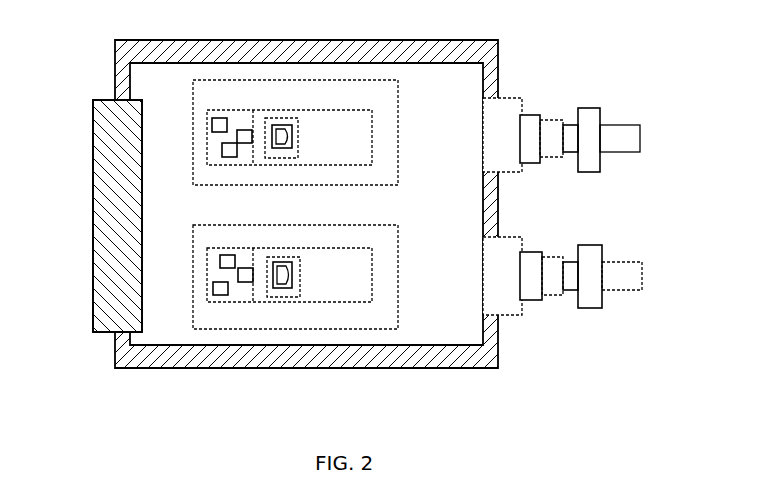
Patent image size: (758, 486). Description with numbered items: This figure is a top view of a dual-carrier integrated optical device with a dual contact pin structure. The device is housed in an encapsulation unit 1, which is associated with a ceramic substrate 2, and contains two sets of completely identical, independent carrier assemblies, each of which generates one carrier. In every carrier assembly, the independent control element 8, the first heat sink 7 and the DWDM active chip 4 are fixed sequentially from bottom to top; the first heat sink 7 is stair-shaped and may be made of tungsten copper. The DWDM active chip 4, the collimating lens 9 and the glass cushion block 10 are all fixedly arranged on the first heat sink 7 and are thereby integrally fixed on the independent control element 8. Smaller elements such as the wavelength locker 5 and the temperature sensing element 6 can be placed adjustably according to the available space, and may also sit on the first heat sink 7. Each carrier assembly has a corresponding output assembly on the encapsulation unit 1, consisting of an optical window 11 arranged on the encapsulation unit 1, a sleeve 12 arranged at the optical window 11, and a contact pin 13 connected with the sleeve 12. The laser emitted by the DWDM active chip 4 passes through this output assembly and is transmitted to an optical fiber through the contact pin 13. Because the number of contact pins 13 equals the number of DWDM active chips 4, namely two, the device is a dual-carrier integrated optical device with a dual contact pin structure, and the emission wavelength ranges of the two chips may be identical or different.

The encapsulation unit 1 is at (155, 368).
The ceramic substrate 2 is at (95, 217).
The DWDM active chip 4 is at (243, 143).
The wavelength locker 5 is at (212, 125).
The temperature sensing element 6 is at (222, 157).
The first heat sink 7 is at (353, 160).
The independent control element 8 is at (380, 93).
The collimating lens 9 is at (282, 148).
The glass cushion block 10 is at (300, 138).
The optical window 11 is at (488, 107).
The sleeve 12 is at (540, 113).
The contact pin 13 is at (613, 125).